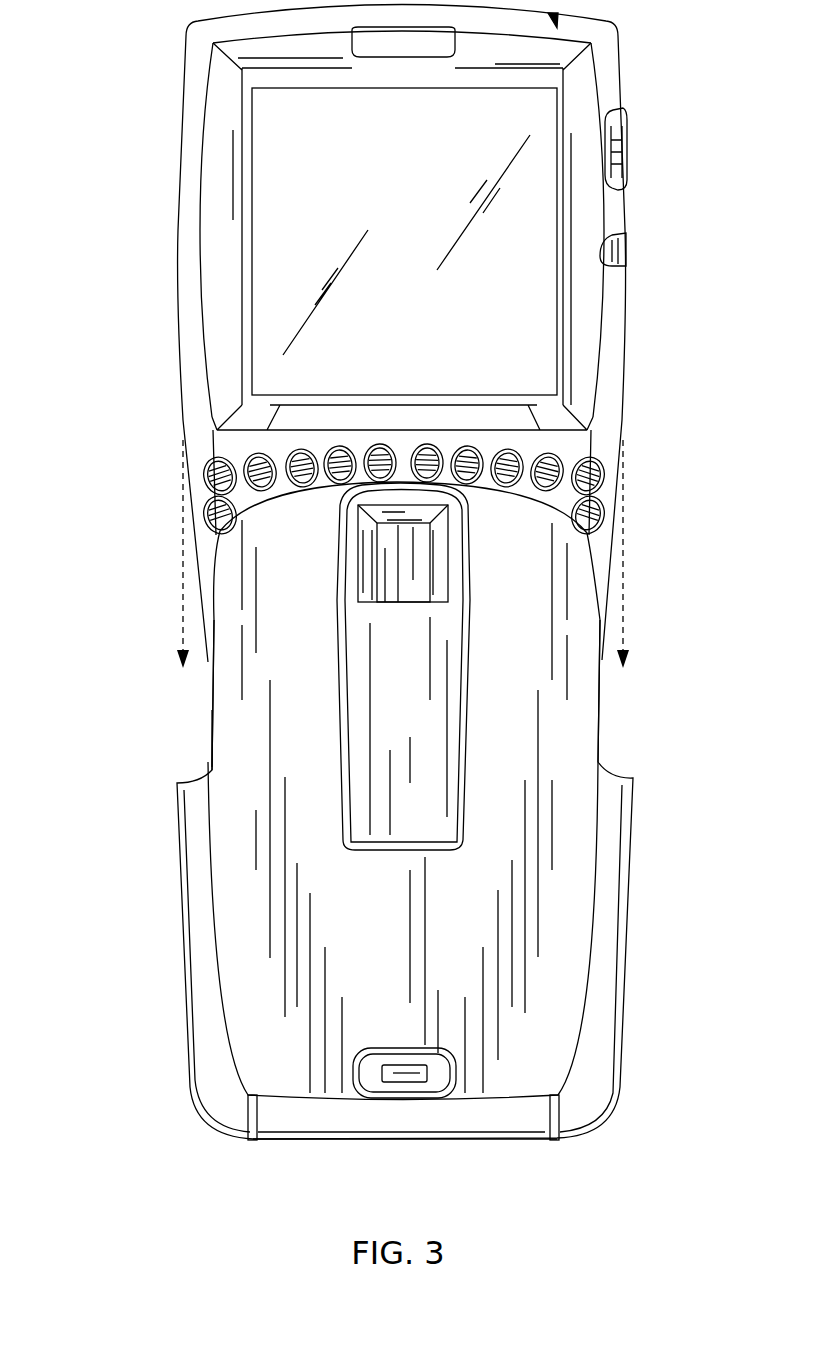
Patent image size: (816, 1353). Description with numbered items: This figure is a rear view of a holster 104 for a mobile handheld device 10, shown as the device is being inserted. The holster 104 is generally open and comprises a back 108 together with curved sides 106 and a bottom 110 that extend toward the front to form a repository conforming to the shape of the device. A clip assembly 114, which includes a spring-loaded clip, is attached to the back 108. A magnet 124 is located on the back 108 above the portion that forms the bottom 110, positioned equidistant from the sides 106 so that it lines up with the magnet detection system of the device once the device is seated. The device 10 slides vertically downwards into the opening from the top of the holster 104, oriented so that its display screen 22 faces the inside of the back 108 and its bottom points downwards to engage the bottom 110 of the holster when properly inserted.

The device 10 is at (625, 330).
The display screen 22 is at (253, 283).
The holster 104 is at (157, 749).
The sides 106 is at (177, 907).
The back 108 is at (598, 737).
The bottom 110 is at (462, 1142).
The clip assembly 114 is at (465, 803).
The magnet 124 is at (402, 1082).